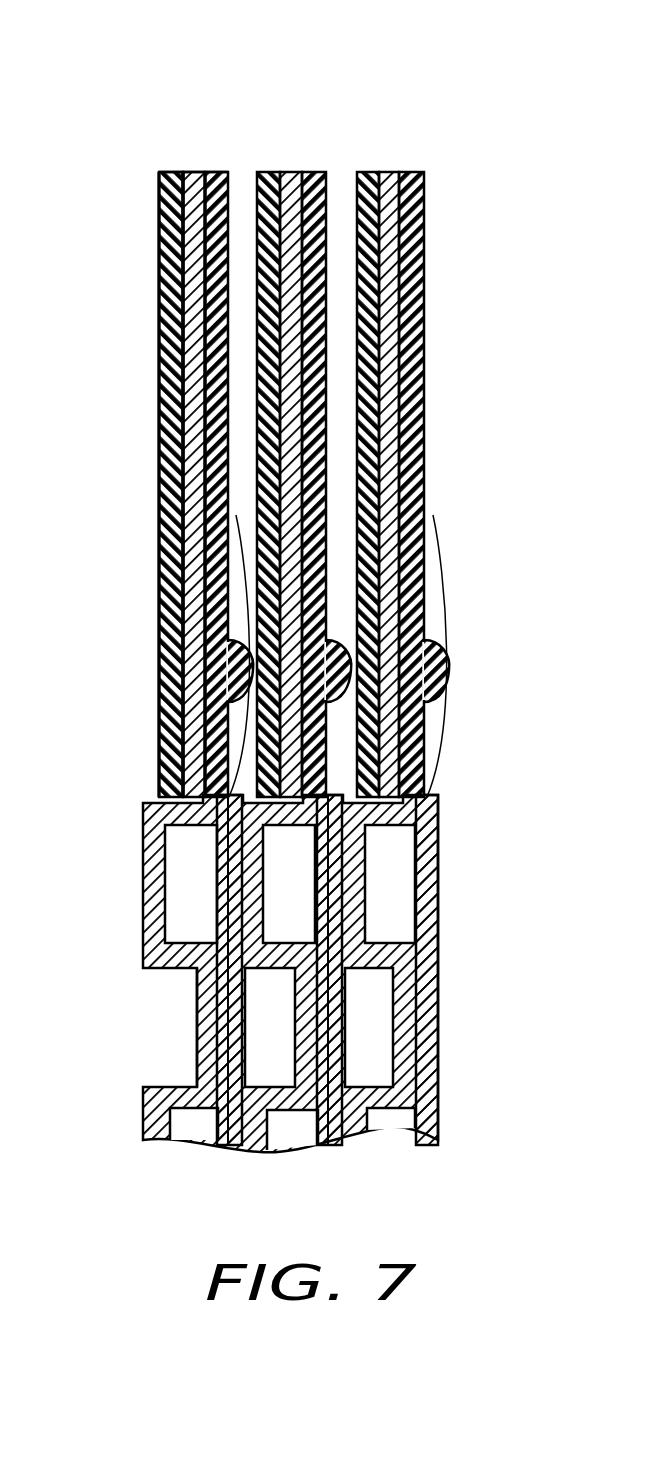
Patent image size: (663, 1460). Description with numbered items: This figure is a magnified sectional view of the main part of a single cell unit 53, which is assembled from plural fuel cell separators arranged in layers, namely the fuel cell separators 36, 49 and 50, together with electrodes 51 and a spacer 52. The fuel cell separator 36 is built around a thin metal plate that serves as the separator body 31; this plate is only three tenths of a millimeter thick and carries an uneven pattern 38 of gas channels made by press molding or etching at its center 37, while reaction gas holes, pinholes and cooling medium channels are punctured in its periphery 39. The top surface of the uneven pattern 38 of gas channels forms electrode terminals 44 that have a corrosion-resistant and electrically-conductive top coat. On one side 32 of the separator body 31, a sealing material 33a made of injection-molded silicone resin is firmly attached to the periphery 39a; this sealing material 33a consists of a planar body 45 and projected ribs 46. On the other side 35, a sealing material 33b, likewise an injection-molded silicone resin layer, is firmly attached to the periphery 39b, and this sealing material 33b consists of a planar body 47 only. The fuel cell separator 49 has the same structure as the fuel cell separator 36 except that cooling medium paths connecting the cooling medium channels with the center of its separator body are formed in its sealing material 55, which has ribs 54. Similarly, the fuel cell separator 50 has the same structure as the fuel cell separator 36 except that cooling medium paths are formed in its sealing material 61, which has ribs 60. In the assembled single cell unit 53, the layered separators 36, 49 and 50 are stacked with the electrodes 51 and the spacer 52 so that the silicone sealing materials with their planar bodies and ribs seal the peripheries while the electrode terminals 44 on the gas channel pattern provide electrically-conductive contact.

The fuel cell separator 36 is at (174, 404).
The separator body 31 is at (192, 173).
The sealing material 33a is at (212, 173).
The one side 32 is at (233, 180).
The sealing material 33b is at (160, 207).
The other side 35 is at (160, 229).
The periphery 39a is at (195, 265).
The periphery 39b is at (172, 313).
The planar body 45 is at (197, 350).
The planar body 47 is at (170, 397).
The periphery 39 is at (195, 507).
The fuel cell separator 49 is at (382, 406).
The fuel cell separator 50 is at (443, 406).
The sealing material 61 is at (382, 346).
The sealing material 55 is at (312, 438).
The projected ribs 46 is at (240, 698).
The ribs 54 is at (345, 704).
The ribs 60 is at (432, 691).
The electrode terminals 44 is at (228, 865).
The electrodes 51 is at (438, 876).
The uneven pattern of gas channels 38 is at (170, 969).
The center 37 is at (143, 1025).
The spacer 52 is at (343, 1008).
The single cell unit 53 is at (302, 1027).